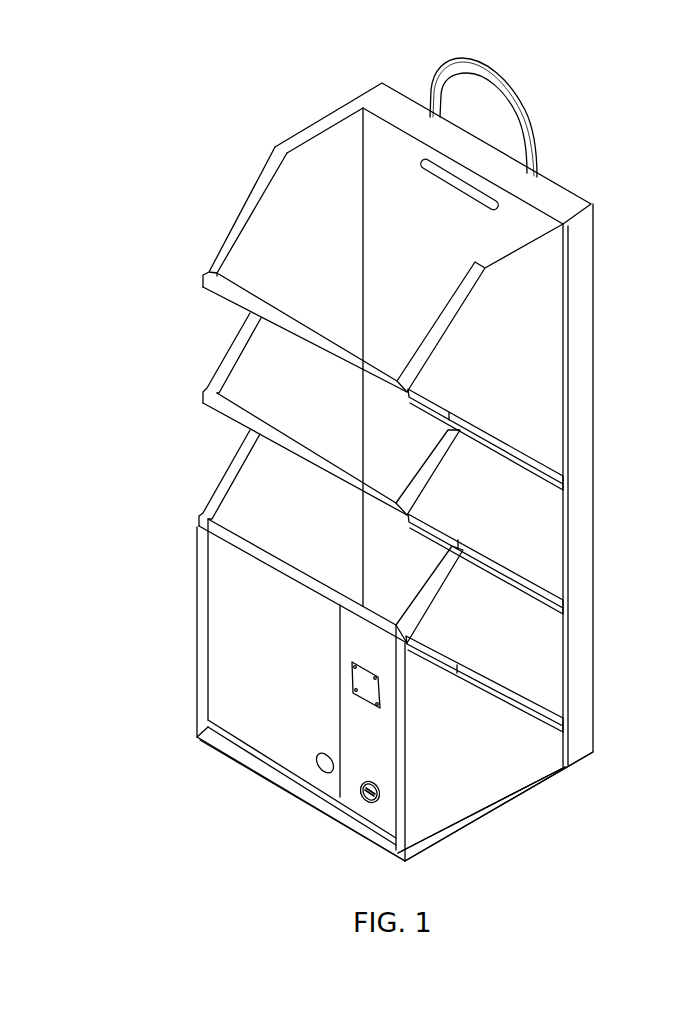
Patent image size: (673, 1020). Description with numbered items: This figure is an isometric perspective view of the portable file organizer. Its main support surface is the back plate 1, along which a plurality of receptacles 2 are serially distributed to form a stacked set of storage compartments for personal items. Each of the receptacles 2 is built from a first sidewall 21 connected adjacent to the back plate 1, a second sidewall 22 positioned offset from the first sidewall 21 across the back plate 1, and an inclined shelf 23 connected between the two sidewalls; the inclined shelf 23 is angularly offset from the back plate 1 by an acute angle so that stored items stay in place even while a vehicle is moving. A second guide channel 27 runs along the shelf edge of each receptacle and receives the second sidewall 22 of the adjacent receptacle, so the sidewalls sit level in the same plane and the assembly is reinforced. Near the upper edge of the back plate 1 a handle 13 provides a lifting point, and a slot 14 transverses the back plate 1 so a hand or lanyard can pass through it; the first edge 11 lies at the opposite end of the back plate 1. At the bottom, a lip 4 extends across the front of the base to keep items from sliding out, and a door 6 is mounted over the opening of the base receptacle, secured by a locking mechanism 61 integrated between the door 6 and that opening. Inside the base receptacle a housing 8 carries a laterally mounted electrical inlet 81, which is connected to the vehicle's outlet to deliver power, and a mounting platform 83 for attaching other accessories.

The back plate 1 is at (372, 466).
The first edge 11 is at (567, 184).
The handle 13 is at (457, 70).
The slot 14 is at (468, 200).
The plurality of receptacles 2 is at (363, 504).
The first sidewall 21 is at (245, 207).
The second sidewall 22 is at (442, 330).
The inclined shelf 23 is at (323, 343).
The second guide channel 27 is at (495, 443).
The lip 4 is at (223, 728).
The door 6 is at (246, 691).
The locking mechanism 61 is at (320, 768).
The housing 8 is at (341, 788).
The electrical inlet 81 is at (372, 803).
The mounting platform 83 is at (358, 683).